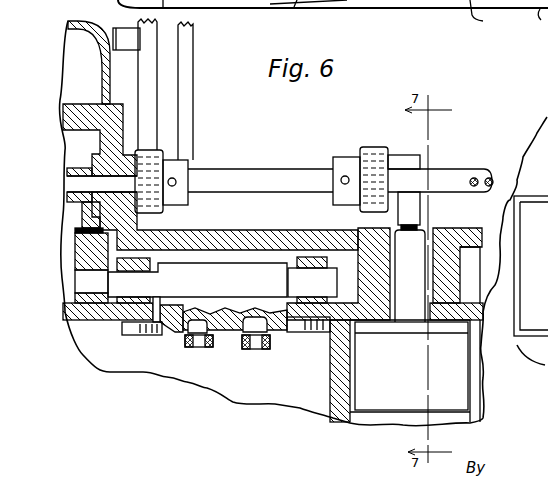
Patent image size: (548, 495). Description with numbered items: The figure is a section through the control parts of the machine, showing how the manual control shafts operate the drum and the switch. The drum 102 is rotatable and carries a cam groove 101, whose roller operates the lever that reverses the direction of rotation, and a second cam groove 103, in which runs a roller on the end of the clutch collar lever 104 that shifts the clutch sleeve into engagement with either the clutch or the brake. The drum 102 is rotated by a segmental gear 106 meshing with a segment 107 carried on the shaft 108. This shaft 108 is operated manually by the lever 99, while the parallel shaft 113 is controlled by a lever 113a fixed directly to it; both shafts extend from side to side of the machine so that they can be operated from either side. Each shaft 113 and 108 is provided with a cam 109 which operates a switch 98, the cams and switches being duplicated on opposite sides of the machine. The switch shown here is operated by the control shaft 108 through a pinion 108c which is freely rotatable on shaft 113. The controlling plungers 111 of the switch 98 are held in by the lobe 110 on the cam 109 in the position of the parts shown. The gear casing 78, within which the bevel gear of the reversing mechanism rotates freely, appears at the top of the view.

The gear casing 78 is at (485, 17).
The switch 98 is at (415, 371).
The lever 99 is at (140, 21).
The cam groove 101 is at (240, 346).
The rotatable drum 102 is at (236, 334).
The second cam groove 103 is at (186, 334).
The clutch collar lever 104 is at (188, 347).
The segmental gear 106 is at (83, 262).
The segment 107 is at (82, 218).
The shaft 108 is at (238, 180).
The pinion 108c is at (393, 155).
The cam 109 is at (398, 217).
The lobe 110 is at (418, 222).
The controlling plungers 111 is at (403, 231).
The shaft 113 is at (483, 166).
The lever 113a is at (194, 66).